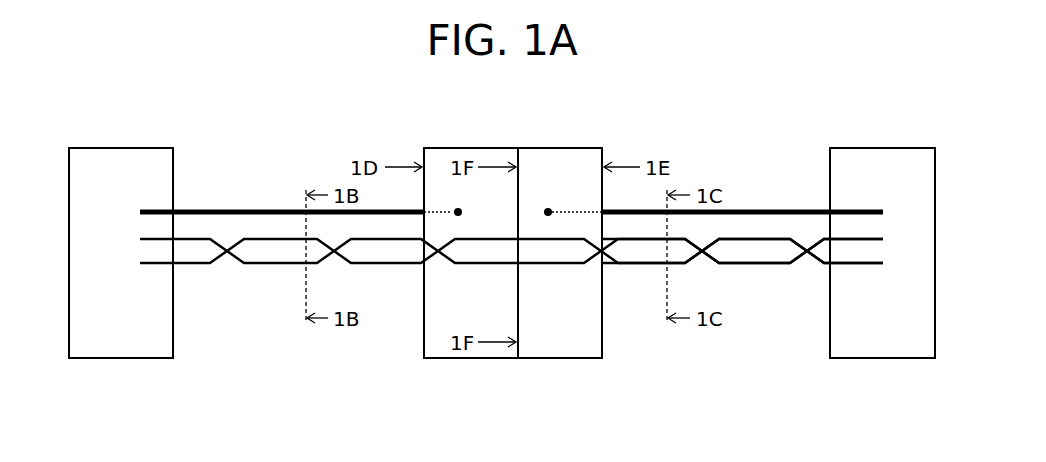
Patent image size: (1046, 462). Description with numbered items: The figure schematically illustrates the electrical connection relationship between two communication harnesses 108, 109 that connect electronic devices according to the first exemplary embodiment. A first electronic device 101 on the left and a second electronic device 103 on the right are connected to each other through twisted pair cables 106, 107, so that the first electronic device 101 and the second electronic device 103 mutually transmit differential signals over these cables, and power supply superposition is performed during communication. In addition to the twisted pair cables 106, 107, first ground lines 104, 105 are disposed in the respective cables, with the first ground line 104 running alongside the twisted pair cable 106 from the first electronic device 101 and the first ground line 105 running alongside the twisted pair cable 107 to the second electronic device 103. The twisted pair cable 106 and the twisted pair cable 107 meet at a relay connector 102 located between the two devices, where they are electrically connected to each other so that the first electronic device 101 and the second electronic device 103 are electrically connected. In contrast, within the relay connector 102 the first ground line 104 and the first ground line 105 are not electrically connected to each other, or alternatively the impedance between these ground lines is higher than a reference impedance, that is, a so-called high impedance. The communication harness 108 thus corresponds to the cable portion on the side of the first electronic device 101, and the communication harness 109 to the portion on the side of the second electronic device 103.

The first electronic device 101 is at (125, 148).
The relay connector 102 is at (555, 148).
The second electronic device 103 is at (883, 148).
The first ground line 104 is at (187, 208).
The first ground line 105 is at (770, 208).
The twisted pair cable 106 is at (255, 265).
The twisted pair cable 107 is at (645, 265).
The communication harness 108 is at (348, 337).
The communication harness 109 is at (788, 340).